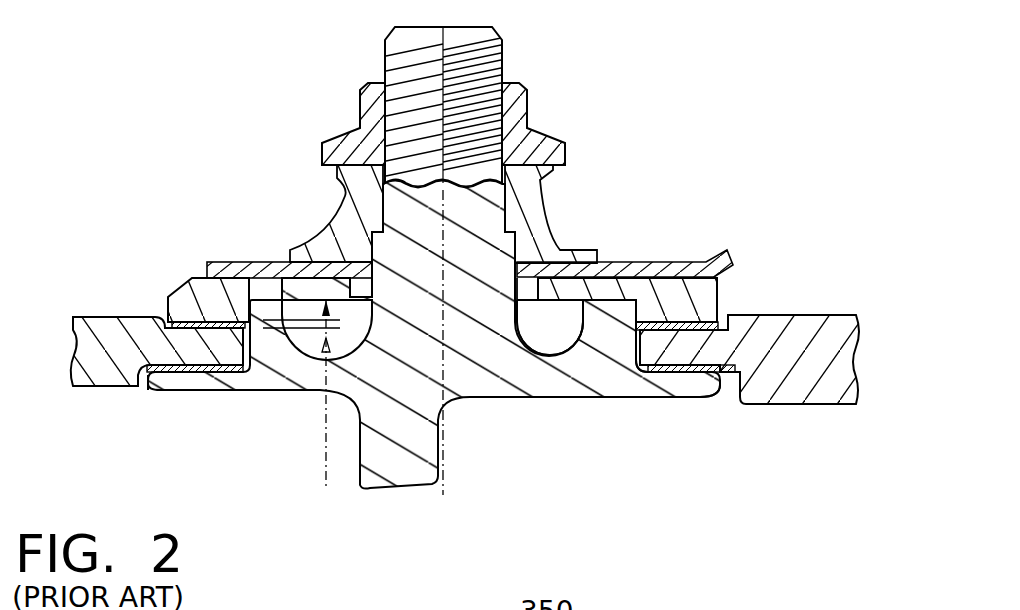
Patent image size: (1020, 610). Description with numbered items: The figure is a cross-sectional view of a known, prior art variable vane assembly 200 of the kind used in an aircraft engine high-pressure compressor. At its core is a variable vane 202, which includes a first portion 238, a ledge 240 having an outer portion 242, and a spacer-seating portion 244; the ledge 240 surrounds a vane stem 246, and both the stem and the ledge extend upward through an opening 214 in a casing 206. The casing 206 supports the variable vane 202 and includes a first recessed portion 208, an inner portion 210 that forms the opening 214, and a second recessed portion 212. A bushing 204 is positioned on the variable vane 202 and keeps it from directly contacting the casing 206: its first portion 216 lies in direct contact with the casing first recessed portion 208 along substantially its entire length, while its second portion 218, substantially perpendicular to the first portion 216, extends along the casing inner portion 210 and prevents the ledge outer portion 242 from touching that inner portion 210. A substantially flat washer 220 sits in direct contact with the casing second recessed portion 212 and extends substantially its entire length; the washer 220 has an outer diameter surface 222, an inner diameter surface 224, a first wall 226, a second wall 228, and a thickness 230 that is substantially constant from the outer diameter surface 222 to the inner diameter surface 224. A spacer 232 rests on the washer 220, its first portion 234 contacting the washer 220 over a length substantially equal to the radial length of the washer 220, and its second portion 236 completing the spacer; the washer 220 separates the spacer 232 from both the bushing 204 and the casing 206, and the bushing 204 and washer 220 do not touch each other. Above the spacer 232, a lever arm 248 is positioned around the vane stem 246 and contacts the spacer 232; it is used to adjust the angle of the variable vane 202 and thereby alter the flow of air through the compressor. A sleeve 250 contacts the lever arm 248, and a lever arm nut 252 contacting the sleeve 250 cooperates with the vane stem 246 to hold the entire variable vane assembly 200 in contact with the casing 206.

The variable vane assembly 200 is at (186, 150).
The variable vane 202 is at (392, 470).
The bushing 204 is at (223, 368).
The casing 206 is at (822, 330).
The first recessed portion 208 is at (660, 352).
The inner portion 210 is at (600, 340).
The second recessed portion 212 is at (722, 284).
The opening 214 is at (548, 318).
The first portion 216 is at (150, 392).
The second portion 218 is at (286, 352).
The washer 220 is at (684, 250).
The outer diameter surface 222 is at (722, 312).
The inner diameter surface 224 is at (586, 318).
The first wall 226 is at (700, 345).
The second wall 228 is at (660, 300).
The thickness 230 is at (326, 446).
The spacer 232 is at (192, 283).
The first portion 234 is at (178, 312).
The second portion 236 is at (278, 274).
The first portion 238 is at (655, 383).
The ledge 240 is at (583, 355).
The outer portion 242 is at (245, 337).
The spacer-seating portion 244 is at (265, 270).
The vane stem 246 is at (400, 62).
The lever arm 248 is at (724, 258).
The sleeve 250 is at (545, 182).
The lever arm nut 252 is at (535, 140).